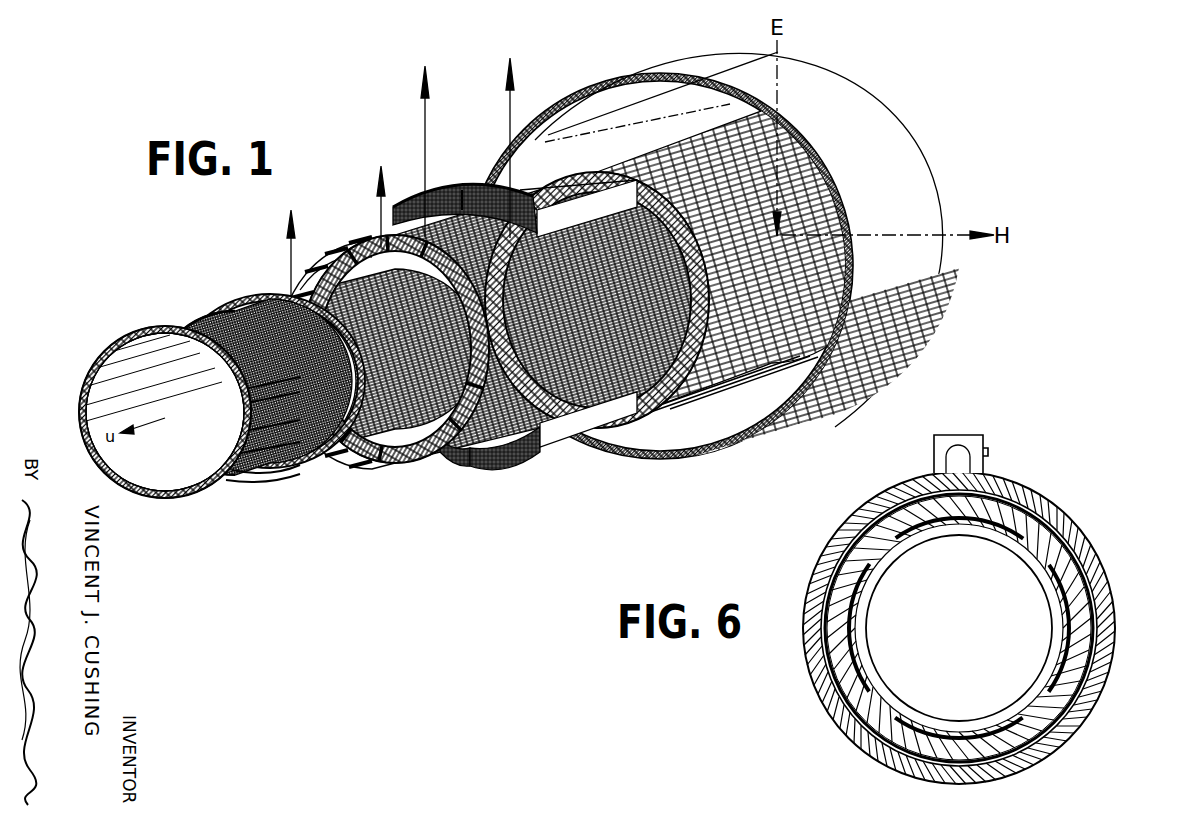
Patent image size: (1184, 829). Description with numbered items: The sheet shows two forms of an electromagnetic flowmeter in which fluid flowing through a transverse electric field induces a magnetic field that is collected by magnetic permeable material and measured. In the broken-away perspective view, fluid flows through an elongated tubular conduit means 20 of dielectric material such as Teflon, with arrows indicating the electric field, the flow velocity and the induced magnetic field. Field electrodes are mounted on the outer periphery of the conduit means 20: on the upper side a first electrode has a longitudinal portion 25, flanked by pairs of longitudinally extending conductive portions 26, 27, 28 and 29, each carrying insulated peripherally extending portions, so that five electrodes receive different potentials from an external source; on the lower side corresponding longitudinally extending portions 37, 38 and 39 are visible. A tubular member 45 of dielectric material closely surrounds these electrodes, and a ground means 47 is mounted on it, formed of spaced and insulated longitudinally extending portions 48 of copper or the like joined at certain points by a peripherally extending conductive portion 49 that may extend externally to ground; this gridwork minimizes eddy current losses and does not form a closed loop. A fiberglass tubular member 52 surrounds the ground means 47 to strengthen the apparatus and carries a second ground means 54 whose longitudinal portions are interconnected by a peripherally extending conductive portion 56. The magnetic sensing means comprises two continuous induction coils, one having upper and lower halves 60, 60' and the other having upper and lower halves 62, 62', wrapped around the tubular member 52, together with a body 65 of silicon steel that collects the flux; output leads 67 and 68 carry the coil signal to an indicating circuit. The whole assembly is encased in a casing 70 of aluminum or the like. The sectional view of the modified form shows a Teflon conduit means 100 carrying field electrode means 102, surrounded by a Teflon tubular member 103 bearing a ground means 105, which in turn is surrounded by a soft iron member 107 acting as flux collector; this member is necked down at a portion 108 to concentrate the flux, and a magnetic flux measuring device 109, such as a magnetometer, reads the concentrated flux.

In FIG. 1, the tubular conduit means 20 is at (163, 500).
In FIG. 1, the longitudinal portion of first field electrode 25 is at (198, 337).
In FIG. 1, the longitudinal portions of second field electrode 26 is at (217, 360).
In FIG. 1, the longitudinally extending conductive portions 27 is at (233, 383).
In FIG. 1, the longitudinally extending conductive portions 28 is at (242, 402).
In FIG. 1, the longitudinally extending conductive portions 29 is at (230, 433).
In FIG. 1, the longitudinally extending conductive portion of lower field electrode 37 is at (245, 473).
In FIG. 1, the longitudinally extending conductive portion of lower field electrode 38 is at (250, 477).
In FIG. 1, the longitudinally extending conductive portion of lower field electrode 39 is at (233, 453).
In FIG. 1, the tubular member 45 is at (250, 300).
In FIG. 1, the ground means 47 is at (365, 477).
In FIG. 1, the longitudinally extending portions 48 is at (352, 254).
In FIG. 1, the peripherally extending conductive portion 49 is at (291, 258).
In FIG. 1, the tubular member 52 is at (390, 480).
In FIG. 1, the second ground means 54 is at (672, 320).
In FIG. 1, the peripherally extending conductive portion 56 is at (381, 207).
In FIG. 1, the upper half of induction coil 60 is at (465, 185).
In FIG. 1, the lower half of induction coil 60' is at (462, 487).
In FIG. 1, the upper half of induction coil 62 is at (578, 200).
In FIG. 1, the lower half of induction coil 62' is at (553, 455).
In FIG. 1, the body of magnetic permeable material 65 is at (670, 200).
In FIG. 1, the lead 67 is at (425, 100).
In FIG. 1, the lead 68 is at (510, 95).
In FIG. 1, the casing 70 is at (823, 167).
In FIG. 6, the conduit means 100 is at (920, 542).
In FIG. 6, the field electrode means 102 is at (1060, 697).
In FIG. 6, the tubular member 103 is at (870, 720).
In FIG. 6, the ground means 105 is at (838, 683).
In FIG. 6, the member of magnetic permeable material 107 is at (1075, 535).
In FIG. 6, the necked down portion 108 is at (934, 458).
In FIG. 6, the magnetic flux measuring device 109 is at (988, 452).